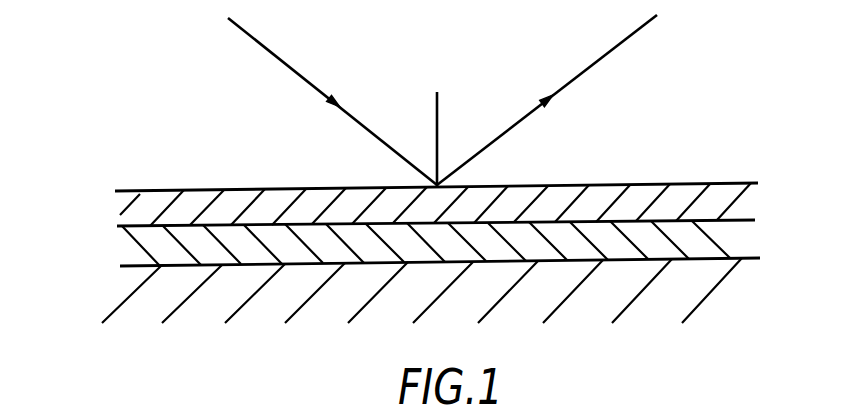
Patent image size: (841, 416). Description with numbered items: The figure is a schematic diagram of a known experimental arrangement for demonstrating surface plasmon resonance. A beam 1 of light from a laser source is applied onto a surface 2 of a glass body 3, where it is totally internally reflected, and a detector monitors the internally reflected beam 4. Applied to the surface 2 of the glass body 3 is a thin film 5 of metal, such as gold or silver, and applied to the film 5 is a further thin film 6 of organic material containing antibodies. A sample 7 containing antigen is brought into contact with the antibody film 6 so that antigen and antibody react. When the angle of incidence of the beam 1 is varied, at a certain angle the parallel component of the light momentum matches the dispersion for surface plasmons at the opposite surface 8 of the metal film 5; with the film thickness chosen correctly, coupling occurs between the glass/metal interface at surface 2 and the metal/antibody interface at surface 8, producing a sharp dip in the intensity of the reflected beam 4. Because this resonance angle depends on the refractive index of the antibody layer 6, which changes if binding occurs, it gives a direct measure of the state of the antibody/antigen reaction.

The beam of light 1 is at (340, 97).
The surface of glass body 2 is at (636, 183).
The glass body 3 is at (456, 58).
The internally reflected beam 4 is at (545, 90).
The thin film of metal 5 is at (727, 202).
The thin film of organic material containing antibodies 6 is at (723, 242).
The sample containing antigen 7 is at (685, 298).
The opposite surface of the metal film 8 is at (107, 230).